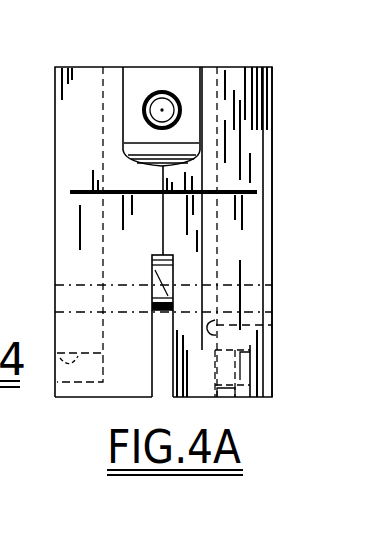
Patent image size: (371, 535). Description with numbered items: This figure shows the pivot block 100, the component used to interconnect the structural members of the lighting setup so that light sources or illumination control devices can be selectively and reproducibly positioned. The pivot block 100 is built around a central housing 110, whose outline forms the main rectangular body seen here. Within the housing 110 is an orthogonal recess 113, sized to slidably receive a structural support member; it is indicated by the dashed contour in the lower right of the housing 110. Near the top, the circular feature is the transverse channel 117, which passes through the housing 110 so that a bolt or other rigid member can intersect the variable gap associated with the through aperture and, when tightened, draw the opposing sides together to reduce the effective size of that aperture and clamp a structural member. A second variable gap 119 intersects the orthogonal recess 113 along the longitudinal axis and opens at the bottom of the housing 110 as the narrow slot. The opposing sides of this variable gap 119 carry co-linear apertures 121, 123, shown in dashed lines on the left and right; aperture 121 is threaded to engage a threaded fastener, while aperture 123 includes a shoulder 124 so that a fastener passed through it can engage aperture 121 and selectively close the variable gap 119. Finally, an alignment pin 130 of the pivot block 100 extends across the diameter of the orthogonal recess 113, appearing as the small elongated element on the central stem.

The pivot block 100 is at (275, 65).
The central housing 110 is at (254, 219).
The orthogonal recess 113 is at (281, 326).
The transverse channel 117 is at (157, 92).
The variable gap 119 is at (158, 392).
The aperture 121 is at (52, 365).
The aperture 123 is at (279, 369).
The shoulder 124 is at (278, 394).
The alignment pin 130 is at (152, 268).